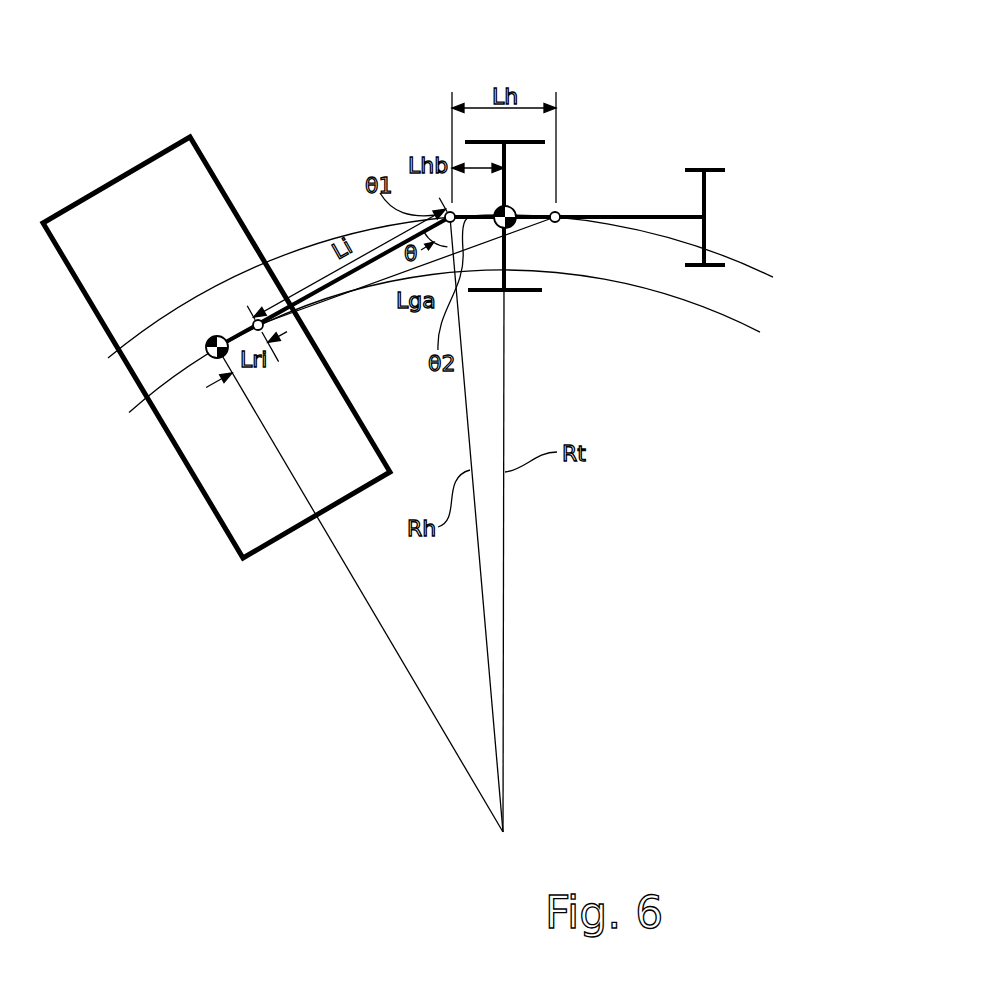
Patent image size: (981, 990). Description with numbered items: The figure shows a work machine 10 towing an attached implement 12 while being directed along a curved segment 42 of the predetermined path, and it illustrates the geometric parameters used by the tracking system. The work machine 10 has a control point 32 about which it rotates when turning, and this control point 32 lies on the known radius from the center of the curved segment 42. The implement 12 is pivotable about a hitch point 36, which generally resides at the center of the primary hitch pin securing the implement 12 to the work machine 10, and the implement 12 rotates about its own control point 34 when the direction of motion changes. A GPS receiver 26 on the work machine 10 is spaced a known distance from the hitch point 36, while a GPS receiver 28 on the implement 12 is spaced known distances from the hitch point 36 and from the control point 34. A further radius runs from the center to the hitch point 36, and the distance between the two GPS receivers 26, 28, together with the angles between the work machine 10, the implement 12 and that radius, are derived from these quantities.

The work machine 10 is at (588, 82).
The implement 12 is at (113, 134).
The GPS receiver 26 is at (559, 222).
The GPS receiver 28 is at (253, 320).
The control point 32 is at (513, 223).
The control point 34 is at (214, 358).
The hitch point 36 is at (450, 212).
The curved segment 42 is at (743, 263).